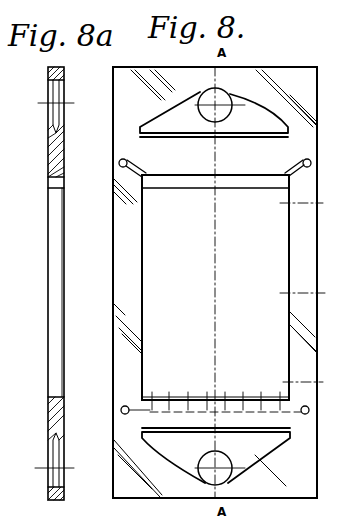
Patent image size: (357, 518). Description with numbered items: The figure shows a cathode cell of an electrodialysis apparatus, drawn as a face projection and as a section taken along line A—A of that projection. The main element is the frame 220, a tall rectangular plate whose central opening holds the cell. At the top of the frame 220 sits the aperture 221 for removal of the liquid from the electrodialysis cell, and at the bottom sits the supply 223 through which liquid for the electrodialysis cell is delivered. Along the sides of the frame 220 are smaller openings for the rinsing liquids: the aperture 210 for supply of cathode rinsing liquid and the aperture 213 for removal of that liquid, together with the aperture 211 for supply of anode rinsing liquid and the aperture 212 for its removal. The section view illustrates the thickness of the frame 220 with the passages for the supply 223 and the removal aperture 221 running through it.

In FIG. 8A, the frame 220 is at (50, 76).
In FIG. 8, the frame 220 is at (126, 101).
In FIG. 8A, the aperture for removal of liquid 221 is at (56, 117).
In FIG. 8, the aperture for removal of liquid 221 is at (227, 109).
In FIG. 8A, the aperture for supply of anode rinsing liquid 211 is at (48, 165).
In FIG. 8, the aperture for supply of anode rinsing liquid 211 is at (310, 160).
In FIG. 8, the aperture for removal of cathode rinsing liquid 213 is at (120, 166).
In FIG. 8, the aperture for removal of anode rinsing liquid 212 is at (122, 407).
In FIG. 8A, the aperture for supply of cathode rinsing liquid 210 is at (48, 398).
In FIG. 8, the aperture for supply of cathode rinsing liquid 210 is at (309, 409).
In FIG. 8A, the supply of liquid for the electrodialysis cell 223 is at (58, 458).
In FIG. 8, the supply of liquid for the electrodialysis cell 223 is at (228, 460).